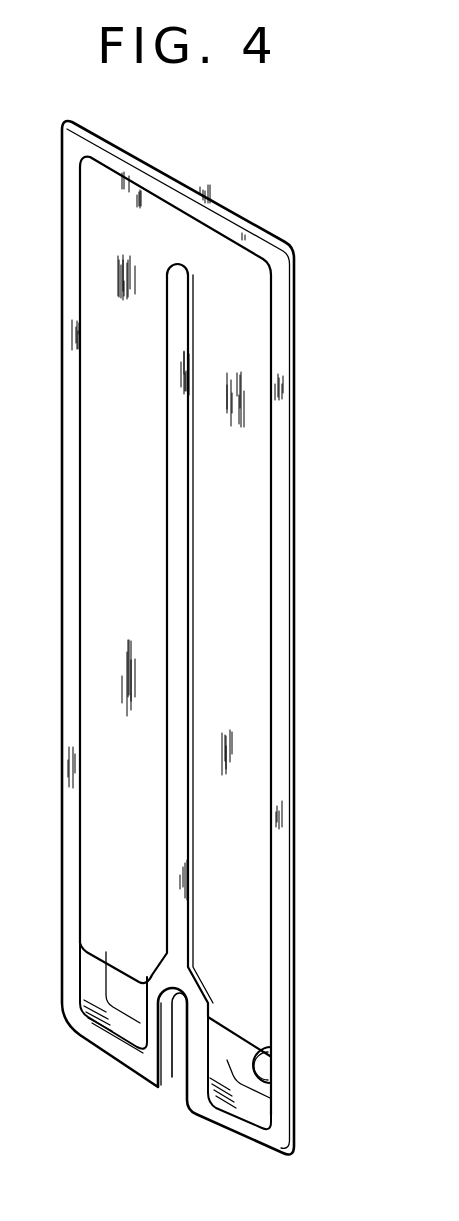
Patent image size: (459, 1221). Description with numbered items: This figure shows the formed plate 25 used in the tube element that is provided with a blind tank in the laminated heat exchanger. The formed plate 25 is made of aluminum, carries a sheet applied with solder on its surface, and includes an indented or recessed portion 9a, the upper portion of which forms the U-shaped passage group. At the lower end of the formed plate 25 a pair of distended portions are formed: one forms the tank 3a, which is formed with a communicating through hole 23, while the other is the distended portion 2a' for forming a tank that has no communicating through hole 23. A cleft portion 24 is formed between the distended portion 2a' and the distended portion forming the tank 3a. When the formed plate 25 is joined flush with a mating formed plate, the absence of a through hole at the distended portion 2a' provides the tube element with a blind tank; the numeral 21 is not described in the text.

The plate 21 is at (285, 625).
The formed plate 25 is at (296, 247).
The indented or recessed portion 9a is at (253, 523).
The distended portion 2a' is at (96, 1029).
The tank 3a is at (245, 1108).
The communicating through hole 23 is at (262, 1065).
The cleft portion 24 is at (173, 1077).